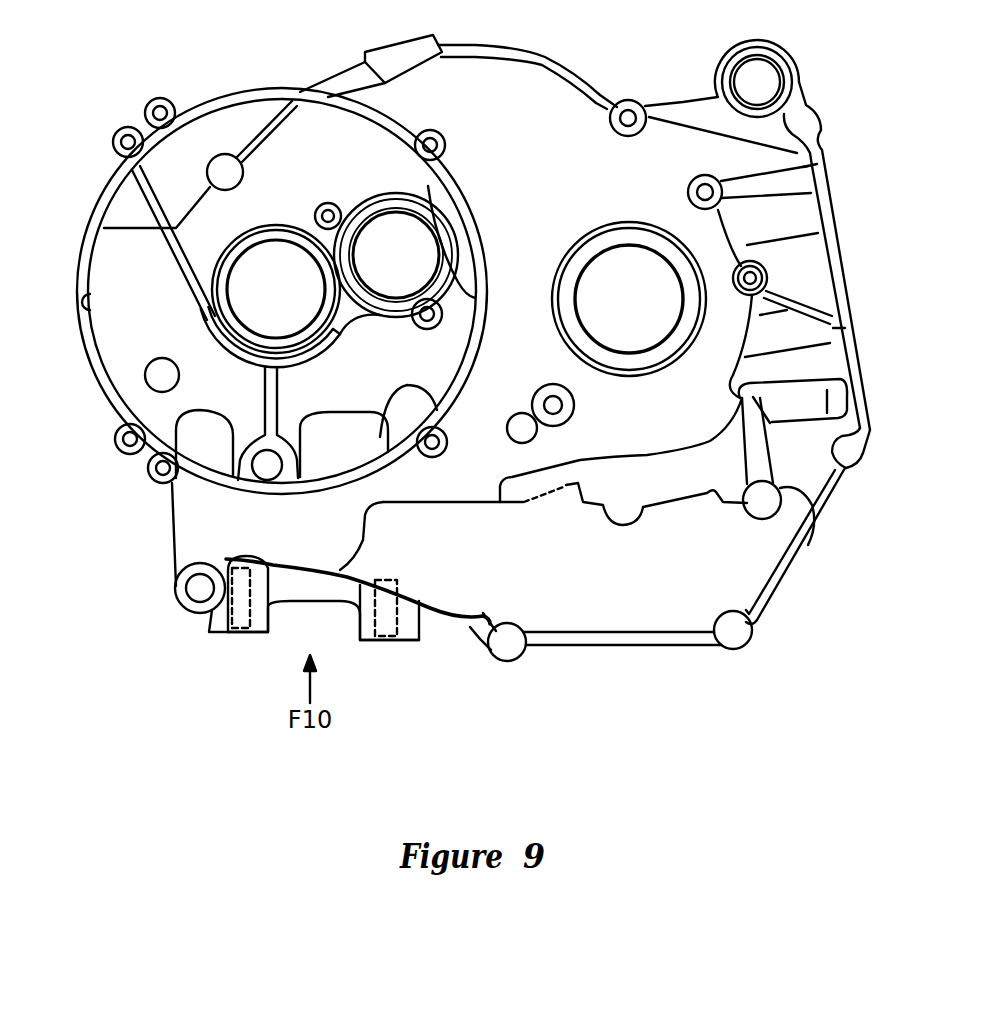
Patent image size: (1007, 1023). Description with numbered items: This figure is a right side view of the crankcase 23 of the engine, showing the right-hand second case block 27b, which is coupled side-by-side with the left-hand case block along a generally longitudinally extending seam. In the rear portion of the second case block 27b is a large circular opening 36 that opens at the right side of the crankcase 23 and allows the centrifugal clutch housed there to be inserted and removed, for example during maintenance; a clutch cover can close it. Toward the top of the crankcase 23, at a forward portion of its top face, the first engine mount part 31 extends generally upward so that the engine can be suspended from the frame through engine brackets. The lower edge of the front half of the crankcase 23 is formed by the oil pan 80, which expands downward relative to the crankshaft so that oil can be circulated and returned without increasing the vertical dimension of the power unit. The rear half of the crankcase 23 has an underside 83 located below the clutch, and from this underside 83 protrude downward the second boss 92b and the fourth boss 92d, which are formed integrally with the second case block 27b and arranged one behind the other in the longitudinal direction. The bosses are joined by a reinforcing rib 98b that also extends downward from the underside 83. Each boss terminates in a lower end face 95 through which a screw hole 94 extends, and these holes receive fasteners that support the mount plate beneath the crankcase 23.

The crankcase 23 is at (558, 60).
The second case block 27b is at (383, 103).
The first engine mount part 31 is at (738, 53).
The opening 36 is at (88, 303).
The oil pan 80 is at (760, 577).
The underside 83 is at (300, 568).
The second boss 92b is at (407, 605).
The fourth boss 92d is at (260, 578).
The screw hole 94 is at (208, 623).
The lower end face 95 is at (257, 634).
The reinforcing rib 98b is at (325, 590).